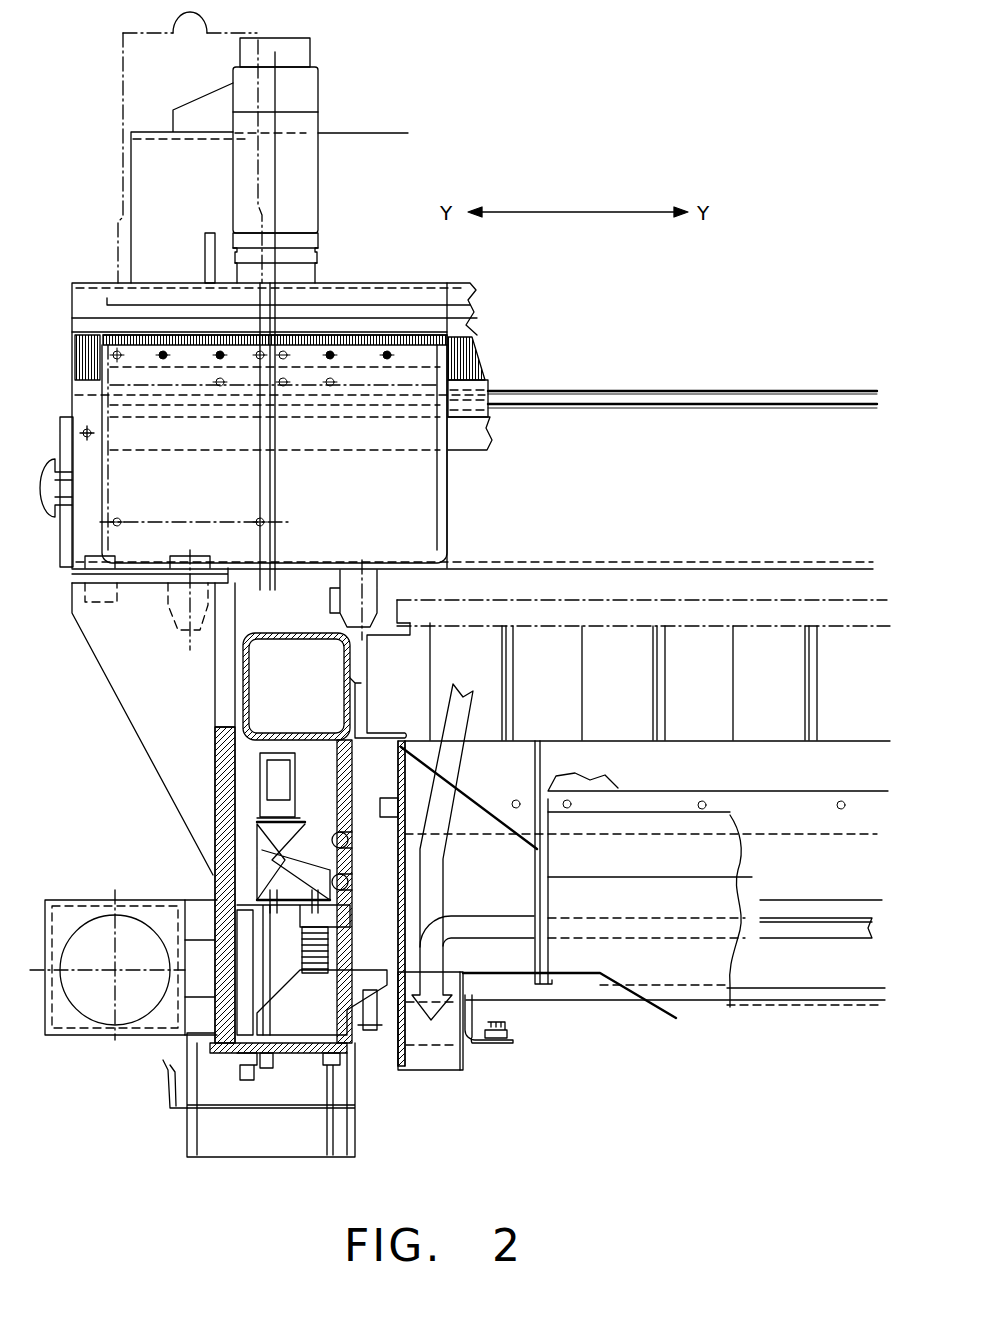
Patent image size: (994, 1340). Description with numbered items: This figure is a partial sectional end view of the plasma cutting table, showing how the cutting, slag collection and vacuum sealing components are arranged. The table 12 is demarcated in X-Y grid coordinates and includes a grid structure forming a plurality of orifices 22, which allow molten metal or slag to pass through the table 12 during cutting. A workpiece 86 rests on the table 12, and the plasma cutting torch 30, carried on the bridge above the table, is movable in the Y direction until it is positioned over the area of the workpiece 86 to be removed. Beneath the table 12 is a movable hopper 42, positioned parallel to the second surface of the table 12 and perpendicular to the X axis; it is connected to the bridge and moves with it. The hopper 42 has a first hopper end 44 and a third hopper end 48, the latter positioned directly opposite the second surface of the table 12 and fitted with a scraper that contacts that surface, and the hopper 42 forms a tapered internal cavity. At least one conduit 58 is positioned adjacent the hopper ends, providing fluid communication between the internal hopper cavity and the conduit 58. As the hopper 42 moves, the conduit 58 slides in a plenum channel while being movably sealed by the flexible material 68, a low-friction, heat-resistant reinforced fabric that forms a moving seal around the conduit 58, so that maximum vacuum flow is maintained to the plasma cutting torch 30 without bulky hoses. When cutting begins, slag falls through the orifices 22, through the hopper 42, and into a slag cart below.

The table 12 is at (817, 655).
The orifices 22 is at (780, 655).
The plasma cutting torch 30 is at (370, 605).
The movable hopper 42 is at (410, 865).
The first hopper end 44 is at (412, 959).
The third hopper end 48 is at (690, 740).
The conduit 58 is at (465, 1063).
The flexible material 68 is at (472, 1018).
The workpiece 86 is at (620, 603).